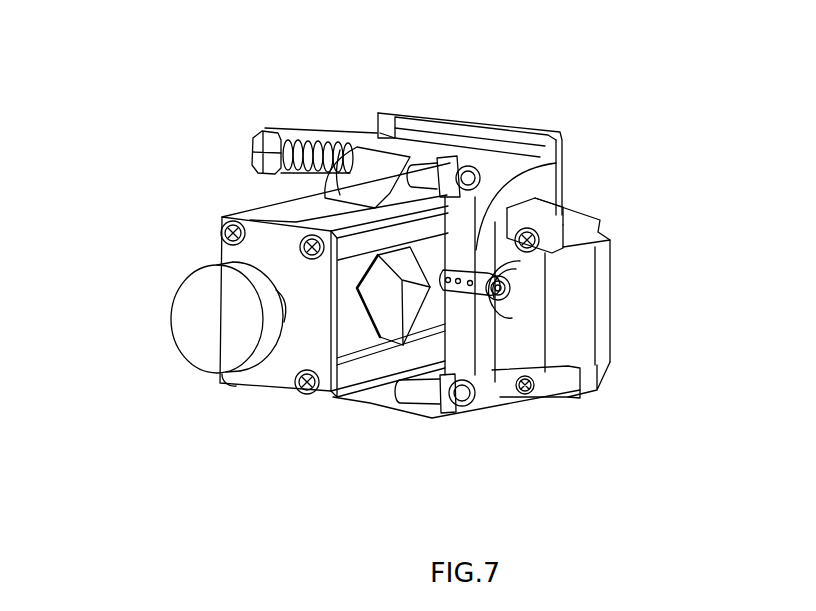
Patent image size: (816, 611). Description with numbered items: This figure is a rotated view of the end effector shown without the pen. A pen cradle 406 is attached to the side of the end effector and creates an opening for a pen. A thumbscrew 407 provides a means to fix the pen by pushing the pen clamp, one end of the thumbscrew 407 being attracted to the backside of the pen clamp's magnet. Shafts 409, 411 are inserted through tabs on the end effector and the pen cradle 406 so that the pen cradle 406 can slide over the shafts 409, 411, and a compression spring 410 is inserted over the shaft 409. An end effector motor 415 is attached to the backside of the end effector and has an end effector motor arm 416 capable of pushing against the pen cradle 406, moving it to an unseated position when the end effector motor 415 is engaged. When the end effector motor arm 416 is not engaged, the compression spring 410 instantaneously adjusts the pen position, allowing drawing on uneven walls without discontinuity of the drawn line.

The pen cradle 406 is at (287, 213).
The thumbscrew 407 is at (200, 318).
The shaft 409 is at (430, 177).
The compression spring 410 is at (313, 128).
The shaft 411 is at (423, 413).
The end effector motor 415 is at (570, 300).
The end effector motor arm 416 is at (560, 167).